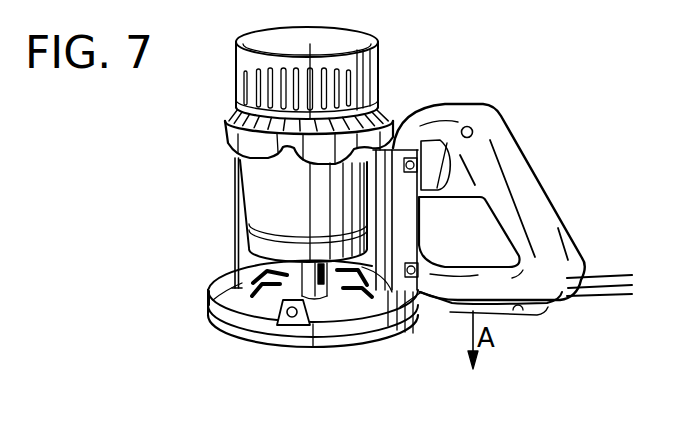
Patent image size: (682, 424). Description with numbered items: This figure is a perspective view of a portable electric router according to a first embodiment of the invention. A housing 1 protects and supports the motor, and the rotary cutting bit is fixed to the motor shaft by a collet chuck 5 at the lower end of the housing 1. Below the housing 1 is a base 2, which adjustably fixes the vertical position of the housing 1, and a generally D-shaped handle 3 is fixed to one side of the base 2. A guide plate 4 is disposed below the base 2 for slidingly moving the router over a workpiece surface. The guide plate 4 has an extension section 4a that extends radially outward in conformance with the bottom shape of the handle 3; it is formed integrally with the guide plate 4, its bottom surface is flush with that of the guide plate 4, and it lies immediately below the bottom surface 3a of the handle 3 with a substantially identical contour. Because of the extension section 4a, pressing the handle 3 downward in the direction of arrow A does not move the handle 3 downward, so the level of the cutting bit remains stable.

The housing 1 is at (380, 84).
The base 2 is at (273, 200).
The handle 3 is at (547, 177).
The bottom surface of the handle 3a is at (450, 304).
The guide plate 4 is at (300, 347).
The extension section 4a is at (520, 311).
The collet chuck 5 is at (212, 296).